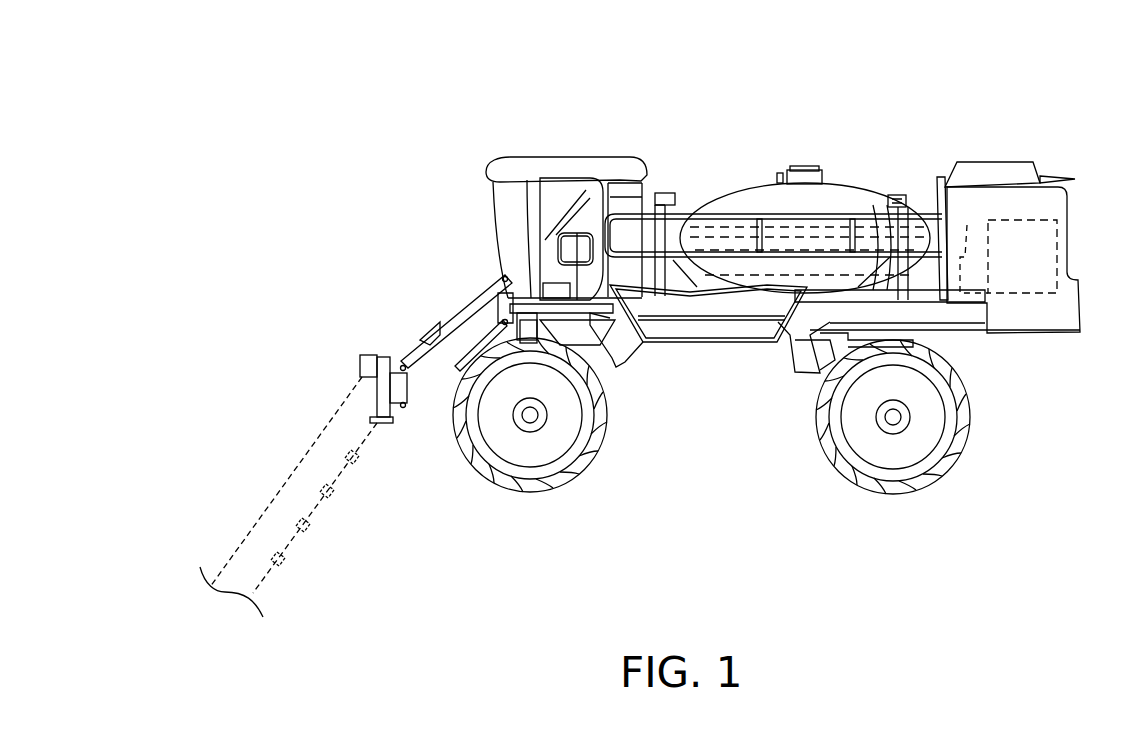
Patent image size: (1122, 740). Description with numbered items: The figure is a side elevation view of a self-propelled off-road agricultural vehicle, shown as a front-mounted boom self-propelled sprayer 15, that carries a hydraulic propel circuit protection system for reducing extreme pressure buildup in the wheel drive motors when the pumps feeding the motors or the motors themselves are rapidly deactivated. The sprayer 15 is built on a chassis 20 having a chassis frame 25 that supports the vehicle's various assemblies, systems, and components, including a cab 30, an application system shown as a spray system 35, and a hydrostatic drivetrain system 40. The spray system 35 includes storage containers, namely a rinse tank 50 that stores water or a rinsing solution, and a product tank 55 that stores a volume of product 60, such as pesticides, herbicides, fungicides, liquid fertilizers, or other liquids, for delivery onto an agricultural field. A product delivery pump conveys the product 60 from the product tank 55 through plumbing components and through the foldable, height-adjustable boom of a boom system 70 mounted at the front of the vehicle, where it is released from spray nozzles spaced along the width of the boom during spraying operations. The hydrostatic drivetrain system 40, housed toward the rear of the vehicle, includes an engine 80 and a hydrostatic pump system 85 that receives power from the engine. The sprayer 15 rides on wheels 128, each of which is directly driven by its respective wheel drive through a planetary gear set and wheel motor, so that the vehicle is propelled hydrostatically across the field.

The self-propelled sprayer 15 is at (830, 50).
The chassis 20 is at (732, 348).
The chassis frame 25 is at (792, 375).
The cab 30 is at (570, 144).
The spray system 35 is at (867, 173).
The hydrostatic drivetrain system 40 is at (1001, 304).
The rinse tank 50 is at (895, 195).
The product tank 55 is at (748, 165).
The product 60 is at (712, 235).
The boom system 70 is at (240, 500).
The engine 80 is at (1030, 240).
The hydrostatic pump system 85 is at (967, 225).
The wheel 128 is at (560, 480).